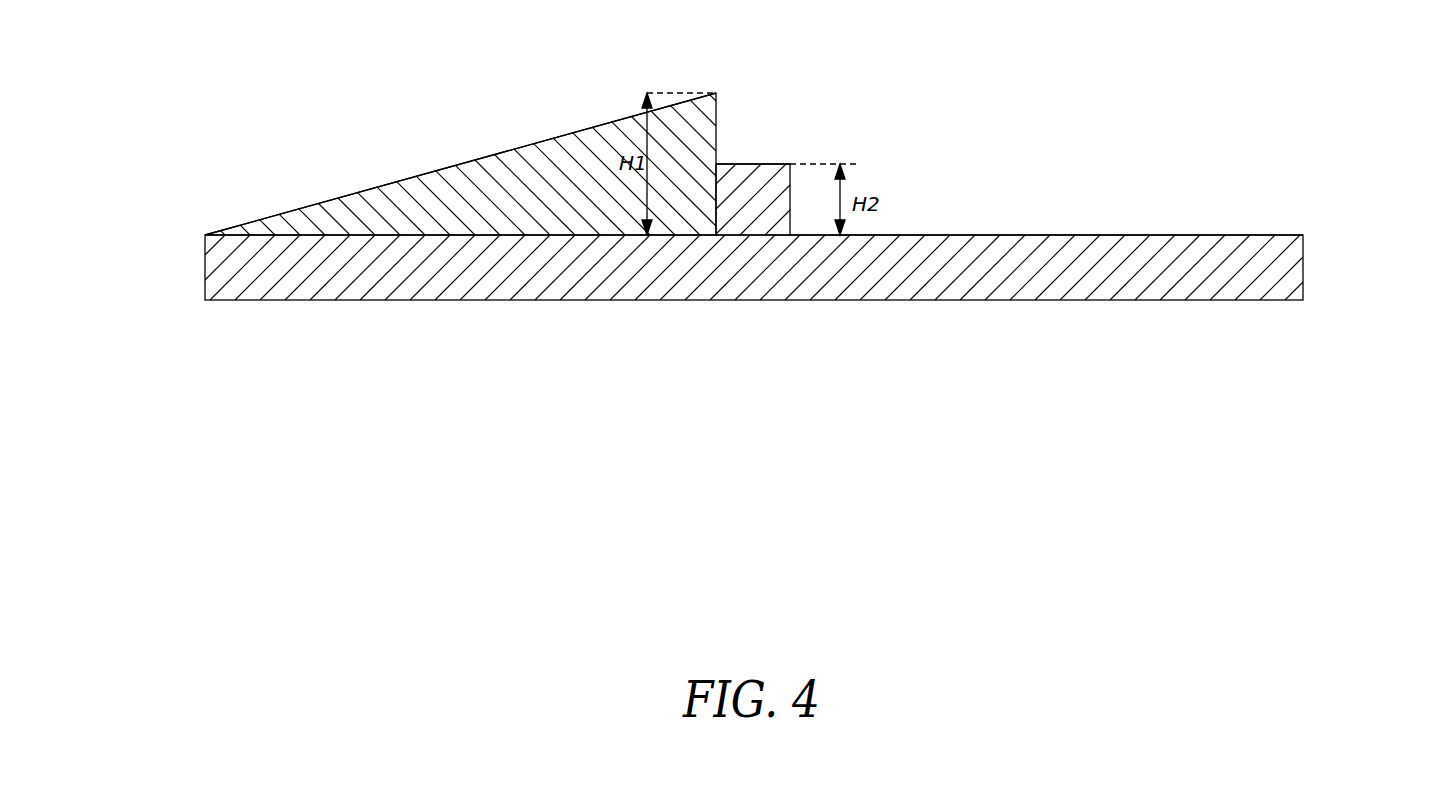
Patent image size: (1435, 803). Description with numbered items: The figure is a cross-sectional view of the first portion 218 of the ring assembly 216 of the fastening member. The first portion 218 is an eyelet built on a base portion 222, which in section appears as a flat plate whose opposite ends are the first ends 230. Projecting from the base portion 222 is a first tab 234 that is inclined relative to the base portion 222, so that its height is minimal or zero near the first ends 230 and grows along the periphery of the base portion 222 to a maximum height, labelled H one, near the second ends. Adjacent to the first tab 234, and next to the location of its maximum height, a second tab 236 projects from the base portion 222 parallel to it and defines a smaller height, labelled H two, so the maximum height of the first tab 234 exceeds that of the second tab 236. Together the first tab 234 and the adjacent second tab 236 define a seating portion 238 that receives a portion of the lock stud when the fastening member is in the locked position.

The ring assembly 216 is at (1197, 200).
The first portion 218 is at (175, 226).
The base portion 222 is at (257, 255).
The first ends 230 is at (182, 276).
The first tabs 234 is at (438, 198).
The second tabs 236 is at (760, 172).
The seating portion 238 is at (781, 124).